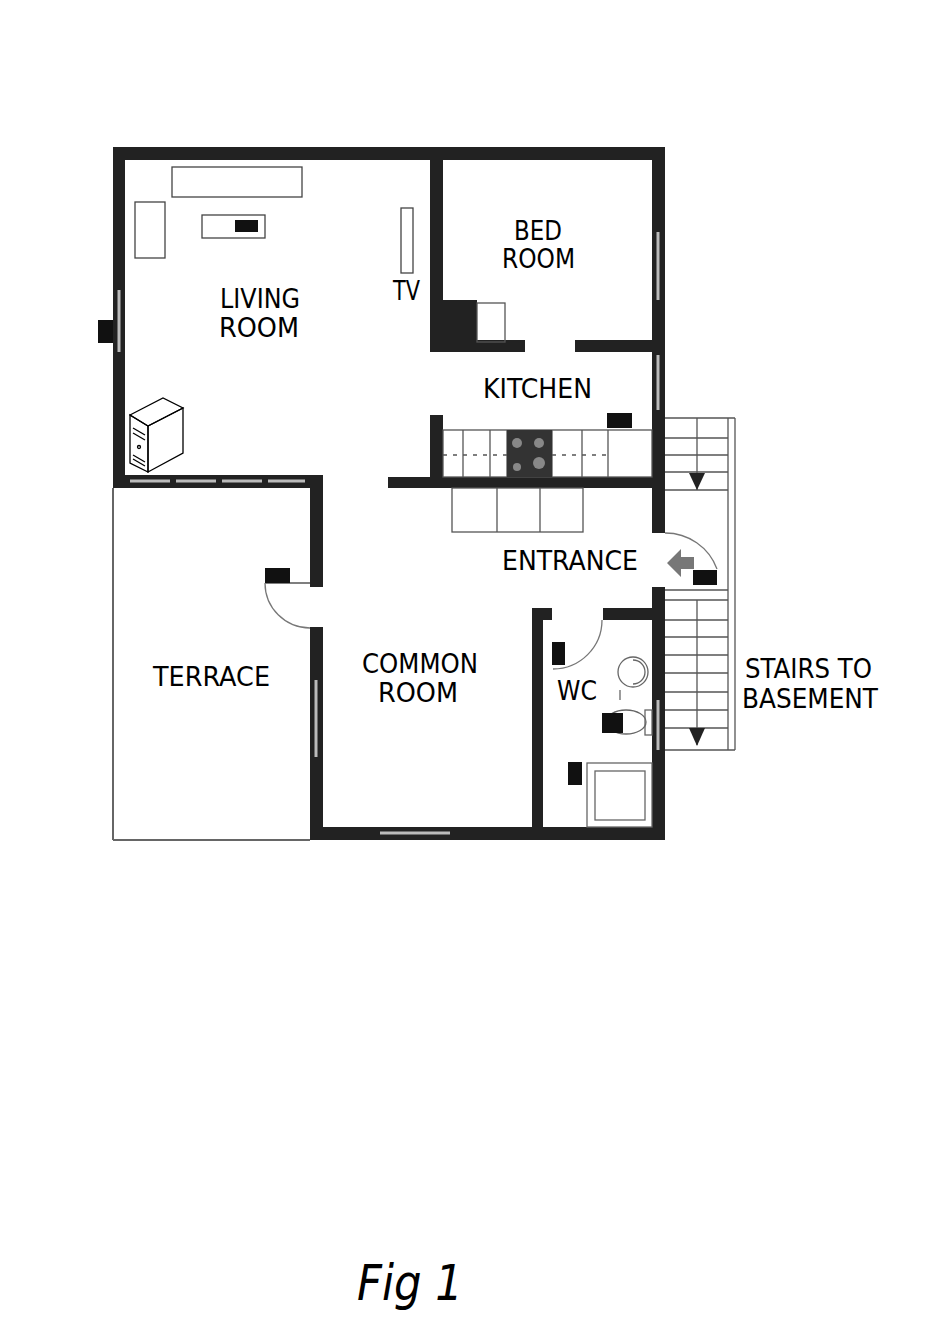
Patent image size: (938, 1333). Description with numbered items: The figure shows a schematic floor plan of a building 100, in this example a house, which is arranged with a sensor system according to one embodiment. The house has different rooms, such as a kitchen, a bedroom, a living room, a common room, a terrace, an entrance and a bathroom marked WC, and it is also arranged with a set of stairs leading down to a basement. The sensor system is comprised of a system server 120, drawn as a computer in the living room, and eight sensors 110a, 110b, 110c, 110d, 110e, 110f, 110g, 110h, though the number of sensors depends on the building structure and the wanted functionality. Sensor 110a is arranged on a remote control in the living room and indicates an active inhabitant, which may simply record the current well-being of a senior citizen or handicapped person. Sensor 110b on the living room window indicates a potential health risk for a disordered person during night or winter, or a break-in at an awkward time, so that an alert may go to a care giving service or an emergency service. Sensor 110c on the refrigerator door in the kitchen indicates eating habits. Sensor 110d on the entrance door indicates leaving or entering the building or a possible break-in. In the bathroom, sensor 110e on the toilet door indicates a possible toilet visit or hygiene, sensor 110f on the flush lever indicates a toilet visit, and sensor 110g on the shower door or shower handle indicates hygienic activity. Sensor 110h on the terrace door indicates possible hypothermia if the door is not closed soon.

The building 100 is at (505, 128).
The sensor 110a is at (255, 218).
The sensor 110b is at (98, 345).
The sensor 110c is at (612, 413).
The sensor 110d is at (700, 570).
The sensor 110e is at (554, 642).
The sensor 110f is at (602, 723).
The sensor 110g is at (568, 765).
The sensor 110h is at (265, 570).
The system server 120 is at (113, 476).